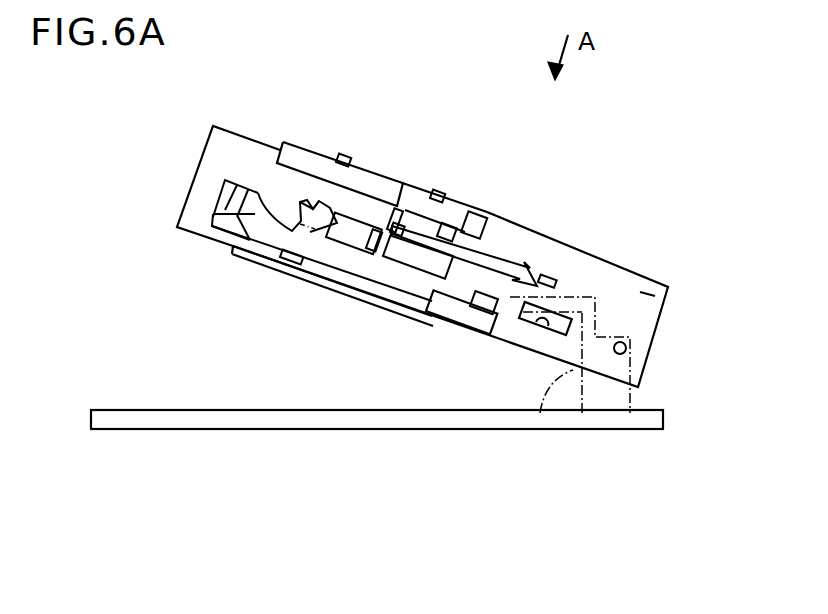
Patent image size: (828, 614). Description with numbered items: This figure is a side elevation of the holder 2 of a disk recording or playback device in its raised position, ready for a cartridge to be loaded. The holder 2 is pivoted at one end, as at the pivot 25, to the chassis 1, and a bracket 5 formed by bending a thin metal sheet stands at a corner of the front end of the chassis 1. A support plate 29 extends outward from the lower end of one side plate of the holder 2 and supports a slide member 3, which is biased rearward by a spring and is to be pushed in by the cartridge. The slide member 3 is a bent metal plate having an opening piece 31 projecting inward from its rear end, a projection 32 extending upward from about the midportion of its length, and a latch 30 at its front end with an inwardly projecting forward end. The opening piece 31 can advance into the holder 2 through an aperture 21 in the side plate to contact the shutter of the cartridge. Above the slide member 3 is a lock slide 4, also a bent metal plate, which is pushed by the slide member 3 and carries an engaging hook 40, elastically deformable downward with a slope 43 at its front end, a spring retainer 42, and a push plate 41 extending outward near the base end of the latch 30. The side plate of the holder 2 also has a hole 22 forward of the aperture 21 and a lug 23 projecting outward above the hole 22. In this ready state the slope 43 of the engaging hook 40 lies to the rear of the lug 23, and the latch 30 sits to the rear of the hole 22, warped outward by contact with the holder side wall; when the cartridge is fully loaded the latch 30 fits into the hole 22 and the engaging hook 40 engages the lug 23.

The chassis 1 is at (310, 422).
The holder 2 is at (655, 292).
The slide member 3 is at (213, 217).
The lock slide 4 is at (307, 148).
The bracket 5 is at (543, 393).
The aperture 21 is at (313, 205).
The hole 22 is at (543, 327).
The lug 23 is at (640, 292).
The pivot 25 is at (628, 348).
The support plate 29 is at (323, 290).
The latch 30 is at (483, 297).
The opening piece 31 is at (310, 200).
The projection 32 is at (400, 210).
The engaging hook 40 is at (513, 258).
The push plate 41 is at (474, 212).
The spring retainer 42 is at (456, 226).
The slope 43 is at (543, 272).